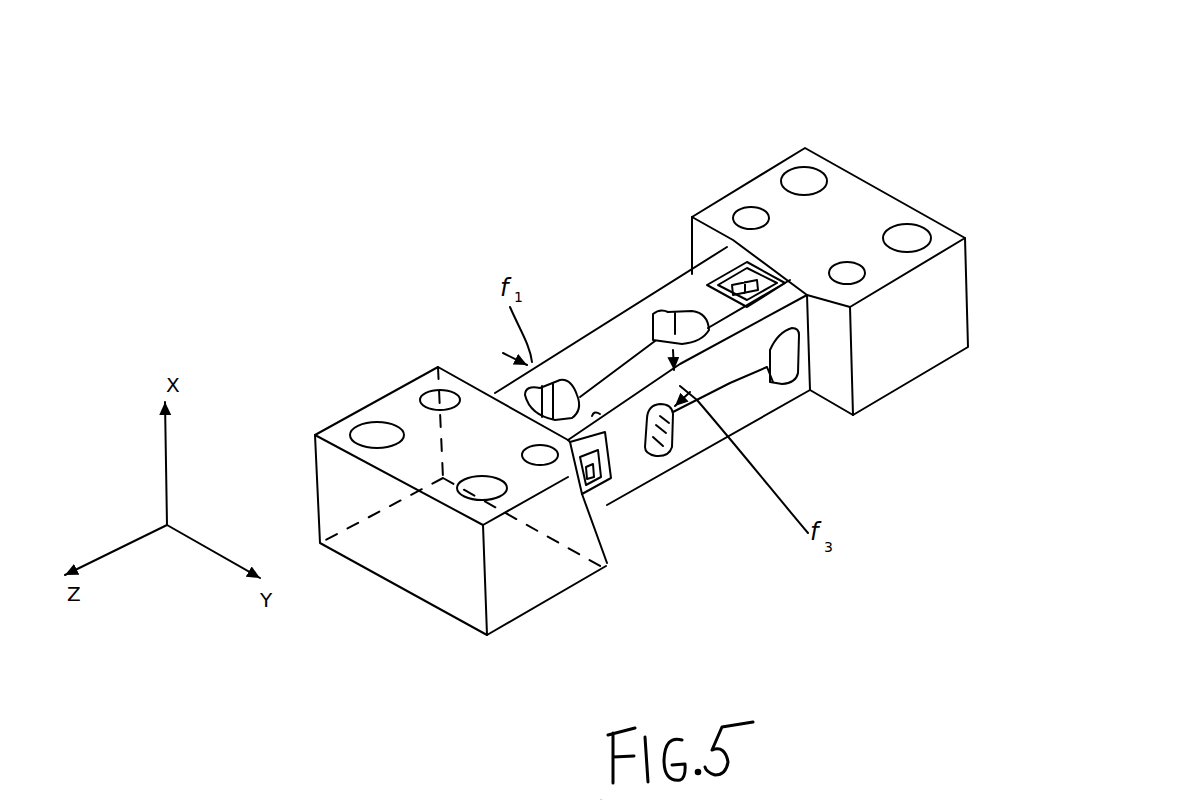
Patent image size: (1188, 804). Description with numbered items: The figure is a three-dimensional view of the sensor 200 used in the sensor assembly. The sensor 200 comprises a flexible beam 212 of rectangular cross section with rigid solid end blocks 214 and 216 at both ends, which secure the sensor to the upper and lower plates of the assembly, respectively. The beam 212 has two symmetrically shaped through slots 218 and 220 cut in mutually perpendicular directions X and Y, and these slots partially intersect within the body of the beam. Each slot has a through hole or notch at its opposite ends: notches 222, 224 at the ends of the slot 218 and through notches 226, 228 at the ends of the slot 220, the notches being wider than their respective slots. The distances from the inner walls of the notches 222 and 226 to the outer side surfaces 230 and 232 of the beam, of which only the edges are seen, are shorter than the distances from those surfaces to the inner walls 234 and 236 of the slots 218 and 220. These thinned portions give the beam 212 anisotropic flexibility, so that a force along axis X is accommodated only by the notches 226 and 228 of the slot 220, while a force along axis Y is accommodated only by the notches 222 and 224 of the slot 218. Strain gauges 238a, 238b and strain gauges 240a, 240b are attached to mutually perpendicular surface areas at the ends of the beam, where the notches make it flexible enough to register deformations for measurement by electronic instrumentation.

The sensor 200 is at (396, 168).
The flexible beam 212 is at (700, 466).
The rigid solid end block 214 is at (367, 404).
The rigid solid end block 216 is at (903, 387).
The through slot 218 is at (609, 358).
The through slot 220 is at (750, 388).
The notch 222 is at (523, 390).
The notch 224 is at (665, 320).
The through notch 226 is at (658, 456).
The through notch 228 is at (790, 350).
The outer side surface 230 is at (647, 292).
The outer side surface 232 is at (592, 416).
The inner wall of slot 234 is at (560, 379).
The inner wall of slot 236 is at (718, 396).
The strain gauge 238a is at (735, 278).
The strain gauge 238b is at (795, 400).
The strain gauge 240a is at (607, 563).
The strain gauge 240b is at (495, 393).